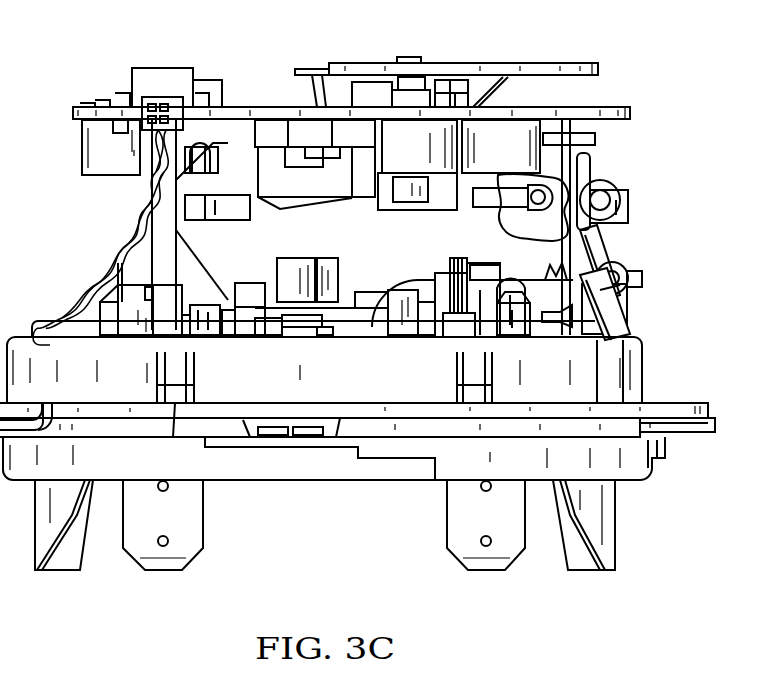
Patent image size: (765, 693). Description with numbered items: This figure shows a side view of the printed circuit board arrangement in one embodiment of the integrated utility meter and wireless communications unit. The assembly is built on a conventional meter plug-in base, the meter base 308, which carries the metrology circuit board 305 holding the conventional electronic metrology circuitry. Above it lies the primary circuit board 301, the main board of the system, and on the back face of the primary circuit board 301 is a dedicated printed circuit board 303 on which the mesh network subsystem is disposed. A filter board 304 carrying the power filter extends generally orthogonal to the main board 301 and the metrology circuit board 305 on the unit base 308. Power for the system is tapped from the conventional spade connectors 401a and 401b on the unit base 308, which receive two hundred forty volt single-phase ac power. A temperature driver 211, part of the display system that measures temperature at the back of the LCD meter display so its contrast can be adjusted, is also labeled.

The temperature driver 211 is at (265, 140).
The primary circuit board 301 is at (633, 117).
The dedicated printed circuit board 303 is at (357, 140).
The filter board 304 is at (570, 128).
The metrology circuit board 305 is at (233, 302).
The meter base 308 is at (642, 358).
The spade connector 401a is at (163, 572).
The spade connector 401b is at (483, 572).